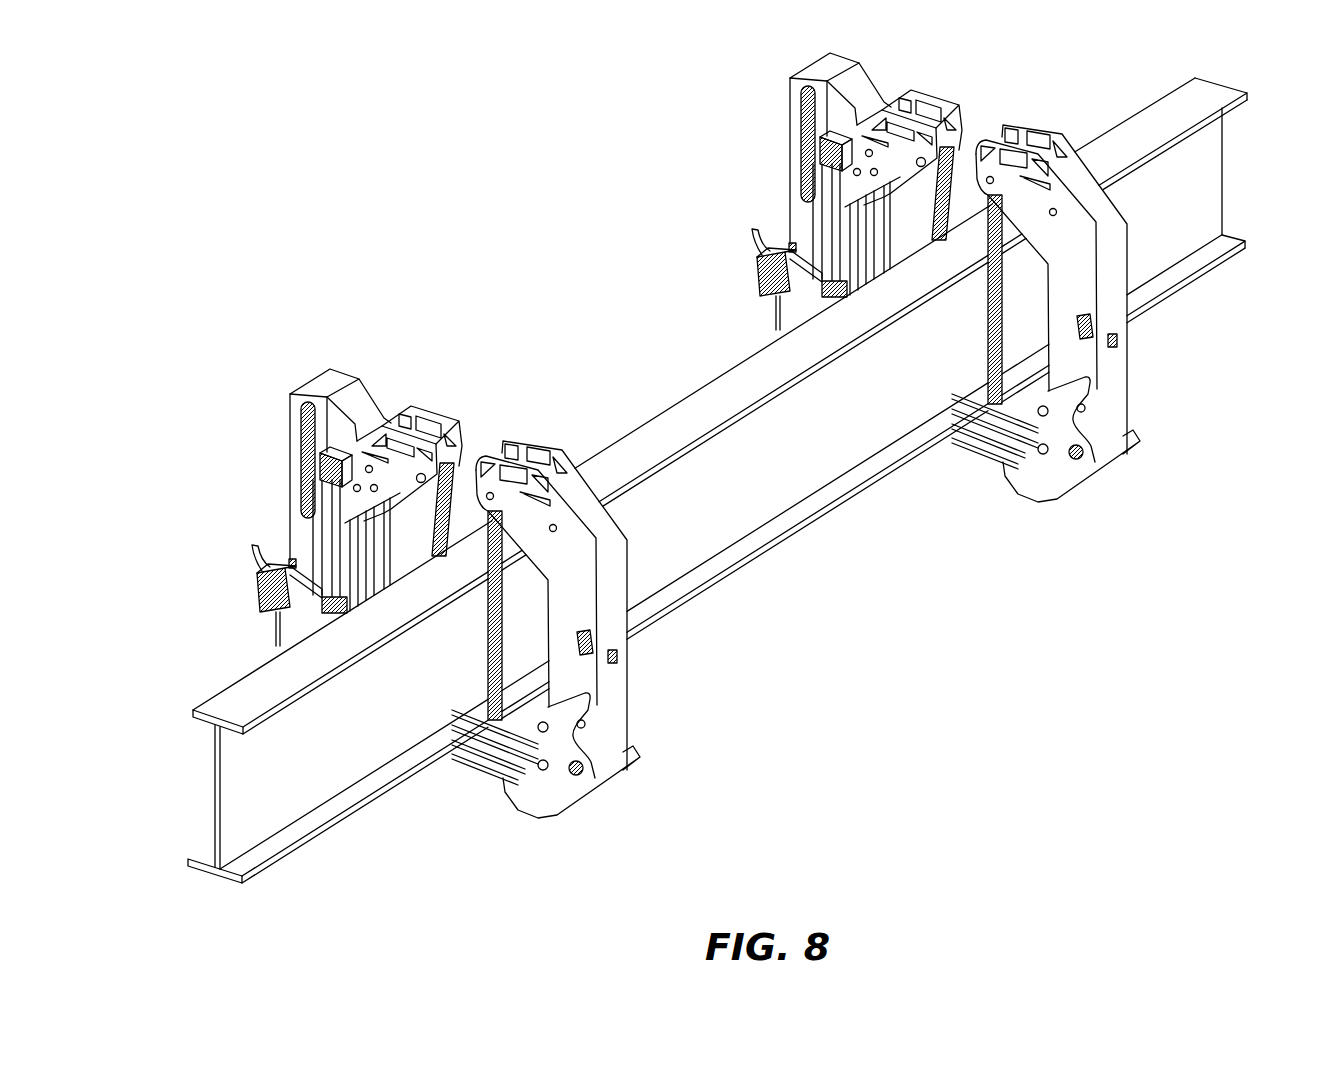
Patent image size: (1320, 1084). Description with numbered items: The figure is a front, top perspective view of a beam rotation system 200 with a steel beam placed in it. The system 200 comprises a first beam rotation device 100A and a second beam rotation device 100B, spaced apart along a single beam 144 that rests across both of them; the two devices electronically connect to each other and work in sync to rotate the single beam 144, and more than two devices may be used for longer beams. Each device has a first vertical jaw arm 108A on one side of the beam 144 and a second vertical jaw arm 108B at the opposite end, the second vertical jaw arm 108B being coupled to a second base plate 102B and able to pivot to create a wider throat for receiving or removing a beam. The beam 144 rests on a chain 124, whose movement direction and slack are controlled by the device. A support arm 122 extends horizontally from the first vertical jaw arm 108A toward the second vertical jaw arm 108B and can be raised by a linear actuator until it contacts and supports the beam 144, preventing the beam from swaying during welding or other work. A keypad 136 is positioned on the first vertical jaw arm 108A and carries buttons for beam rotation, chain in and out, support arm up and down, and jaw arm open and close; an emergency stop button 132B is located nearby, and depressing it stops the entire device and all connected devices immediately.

The beam rotation system 200 is at (257, 224).
The first beam rotation device 100A is at (270, 402).
The second beam rotation device 100B is at (908, 277).
The first vertical jaw arm 108A is at (293, 505).
The second vertical jaw arm 108B is at (625, 697).
The chain 124 is at (464, 500).
The keypad 136 is at (253, 566).
The emergency stop button 132B is at (258, 590).
The support arm 122 is at (463, 765).
The second base plate 102B is at (548, 805).
The beam 144 is at (1150, 128).